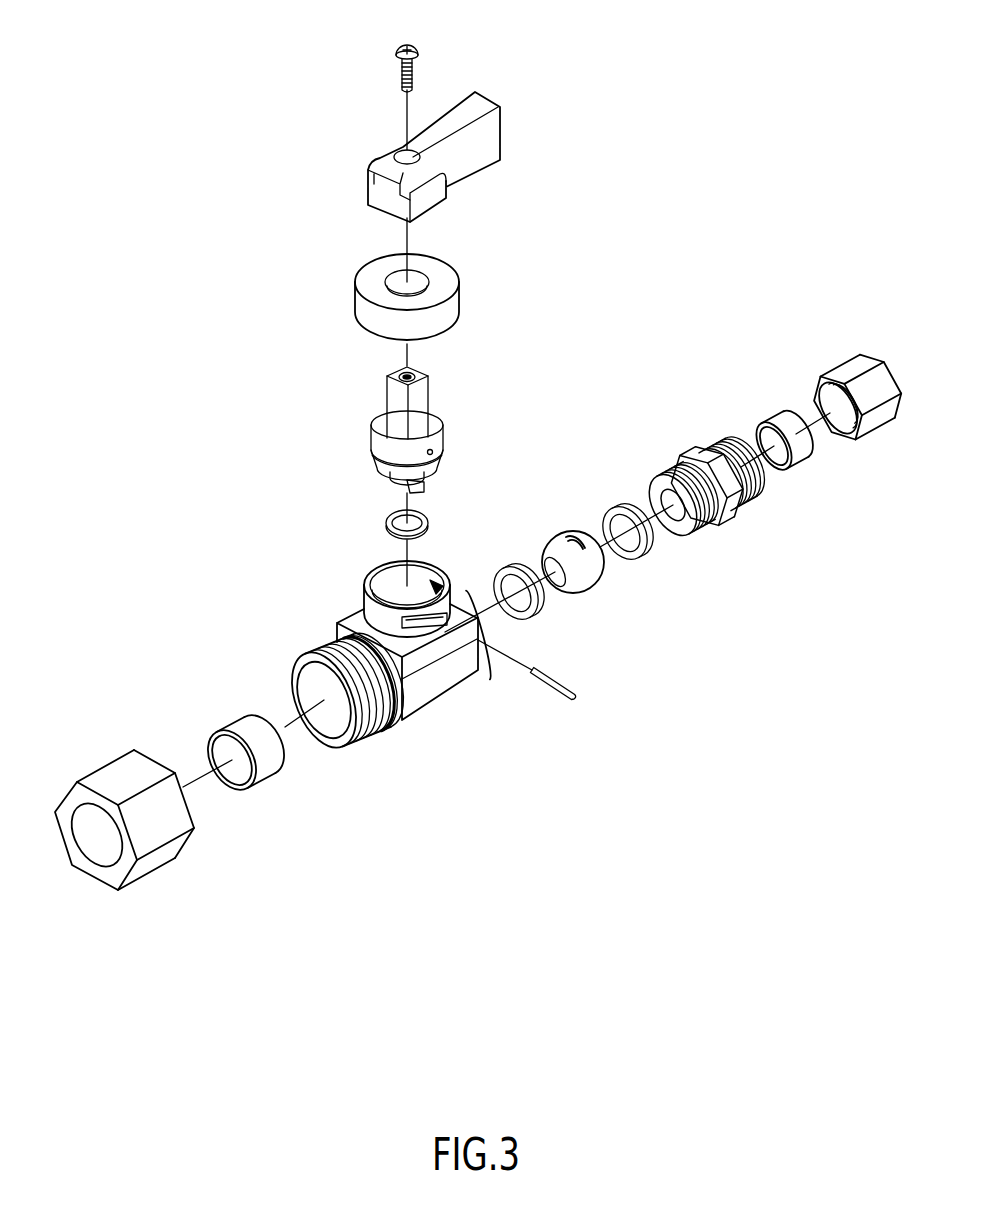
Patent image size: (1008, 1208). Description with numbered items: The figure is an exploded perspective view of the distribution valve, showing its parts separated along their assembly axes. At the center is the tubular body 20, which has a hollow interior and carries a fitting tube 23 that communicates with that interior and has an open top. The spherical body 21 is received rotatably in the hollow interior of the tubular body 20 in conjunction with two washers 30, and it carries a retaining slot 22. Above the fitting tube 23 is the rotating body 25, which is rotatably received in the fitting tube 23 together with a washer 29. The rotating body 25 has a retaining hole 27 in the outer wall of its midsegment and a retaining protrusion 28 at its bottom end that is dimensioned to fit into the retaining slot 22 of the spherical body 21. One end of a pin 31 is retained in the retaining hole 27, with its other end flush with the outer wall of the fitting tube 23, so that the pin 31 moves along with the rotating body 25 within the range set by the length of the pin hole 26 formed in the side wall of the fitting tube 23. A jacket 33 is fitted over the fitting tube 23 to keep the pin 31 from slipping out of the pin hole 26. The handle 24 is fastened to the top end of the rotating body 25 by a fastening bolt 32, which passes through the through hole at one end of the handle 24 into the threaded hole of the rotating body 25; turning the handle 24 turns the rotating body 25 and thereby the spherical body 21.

The tubular body 20 is at (384, 647).
The spherical body 21 is at (590, 555).
The retaining slot 22 is at (569, 536).
The fitting tube 23 is at (363, 604).
The handle 24 is at (500, 133).
The rotating body 25 is at (433, 431).
The pin hole 26 is at (442, 613).
The retaining hole 27 is at (437, 452).
The retaining protrusion 28 is at (426, 485).
The washer 29 is at (386, 521).
The washers 30 is at (652, 552).
The pin 31 is at (575, 698).
The fastening bolt 32 is at (414, 44).
The jacket 33 is at (459, 302).